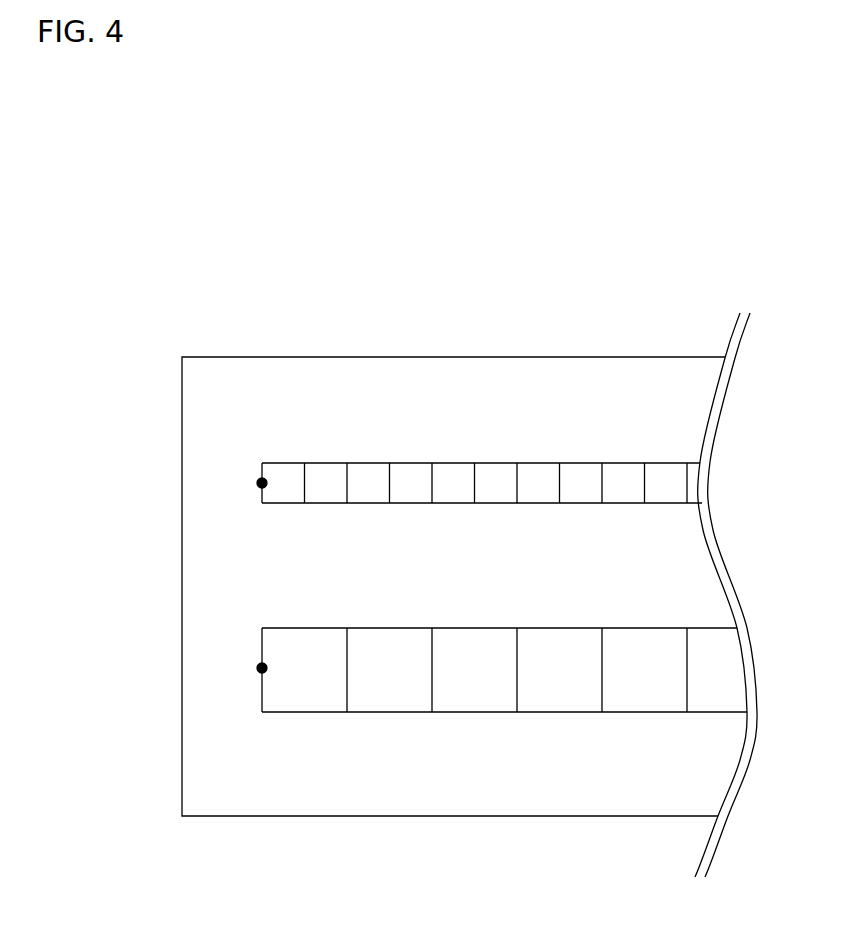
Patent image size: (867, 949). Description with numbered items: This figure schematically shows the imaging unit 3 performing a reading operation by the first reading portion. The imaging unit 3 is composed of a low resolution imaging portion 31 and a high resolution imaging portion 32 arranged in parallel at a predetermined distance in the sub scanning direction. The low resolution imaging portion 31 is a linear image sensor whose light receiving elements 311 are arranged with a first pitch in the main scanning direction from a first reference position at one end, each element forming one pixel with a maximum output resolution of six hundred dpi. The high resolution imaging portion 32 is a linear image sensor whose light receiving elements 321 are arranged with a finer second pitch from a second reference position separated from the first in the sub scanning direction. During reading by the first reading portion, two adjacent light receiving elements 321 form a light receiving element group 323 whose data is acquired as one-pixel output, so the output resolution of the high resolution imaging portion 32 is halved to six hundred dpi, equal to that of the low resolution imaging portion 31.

The imaging unit 3 is at (655, 350).
The low resolution imaging portion 31 is at (240, 648).
The light receiving element 311 is at (474, 721).
The high resolution imaging portion 32 is at (357, 452).
The light receiving element 321 is at (282, 463).
The light receiving element group 323 is at (474, 535).